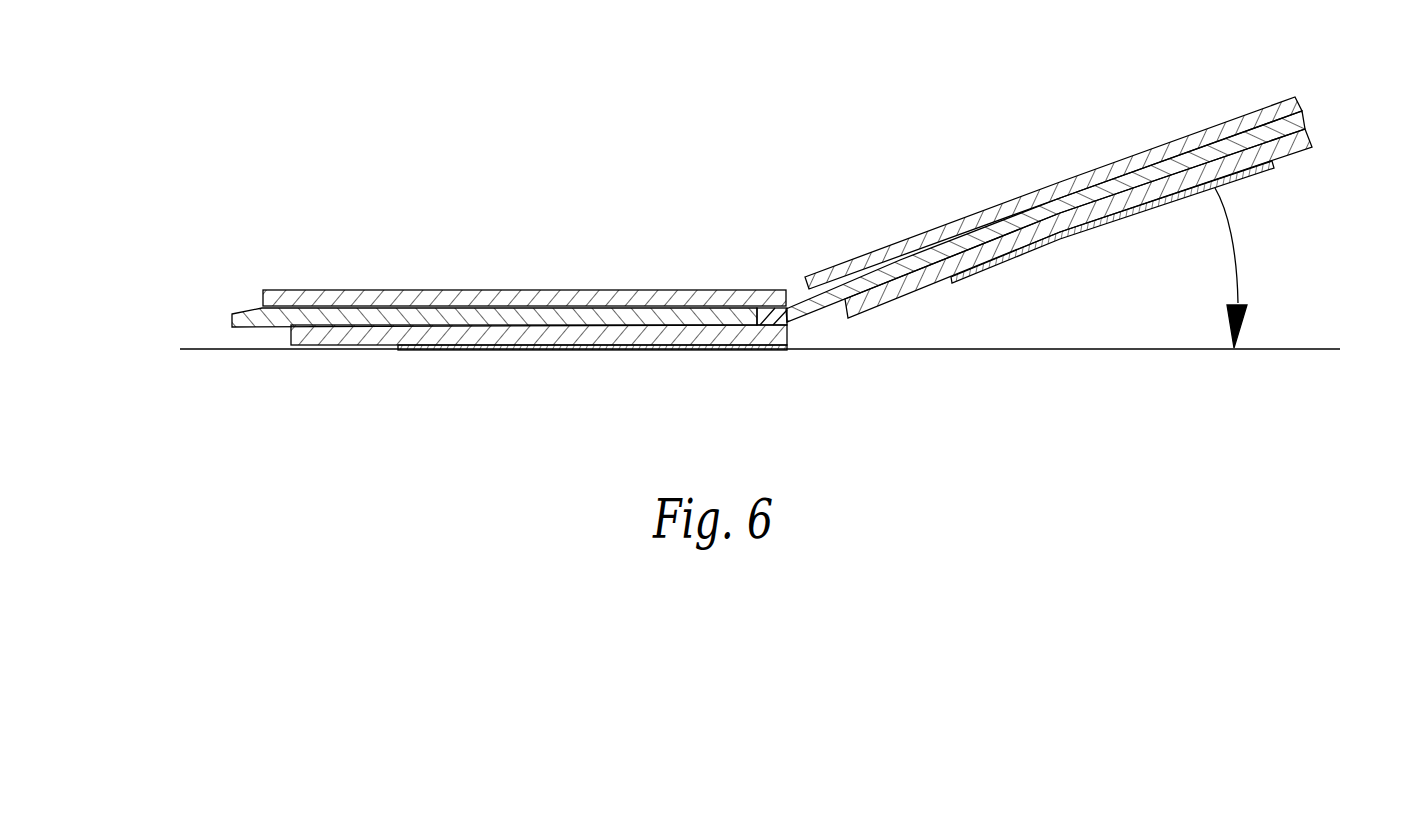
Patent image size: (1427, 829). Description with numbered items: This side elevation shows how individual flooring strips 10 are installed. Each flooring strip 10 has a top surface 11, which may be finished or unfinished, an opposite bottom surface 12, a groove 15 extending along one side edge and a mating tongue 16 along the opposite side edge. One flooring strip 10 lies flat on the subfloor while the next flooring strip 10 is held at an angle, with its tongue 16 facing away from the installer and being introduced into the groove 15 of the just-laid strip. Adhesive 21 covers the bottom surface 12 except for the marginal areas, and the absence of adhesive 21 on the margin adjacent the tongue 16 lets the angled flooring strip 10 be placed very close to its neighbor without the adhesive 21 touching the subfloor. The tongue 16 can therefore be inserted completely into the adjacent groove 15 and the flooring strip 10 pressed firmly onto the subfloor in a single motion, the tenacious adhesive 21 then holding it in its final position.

The flooring strip 10 is at (392, 195).
The top surface 11 is at (323, 290).
The bottom surface 12 is at (318, 348).
The groove 15 is at (772, 305).
The tongue 16 is at (230, 322).
The adhesive 21 is at (522, 350).